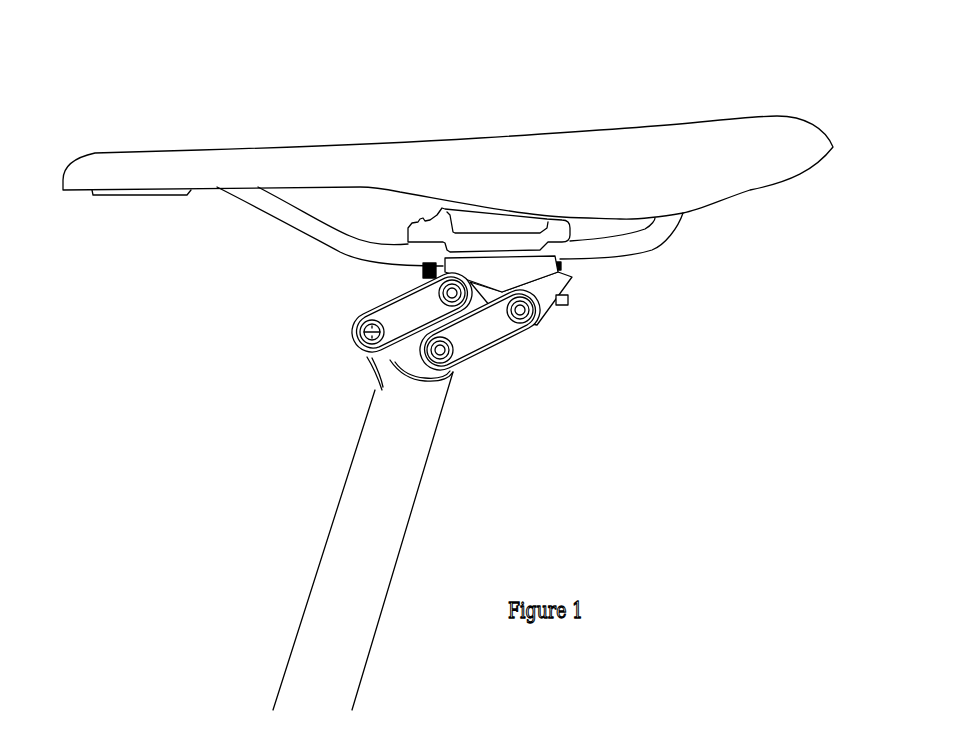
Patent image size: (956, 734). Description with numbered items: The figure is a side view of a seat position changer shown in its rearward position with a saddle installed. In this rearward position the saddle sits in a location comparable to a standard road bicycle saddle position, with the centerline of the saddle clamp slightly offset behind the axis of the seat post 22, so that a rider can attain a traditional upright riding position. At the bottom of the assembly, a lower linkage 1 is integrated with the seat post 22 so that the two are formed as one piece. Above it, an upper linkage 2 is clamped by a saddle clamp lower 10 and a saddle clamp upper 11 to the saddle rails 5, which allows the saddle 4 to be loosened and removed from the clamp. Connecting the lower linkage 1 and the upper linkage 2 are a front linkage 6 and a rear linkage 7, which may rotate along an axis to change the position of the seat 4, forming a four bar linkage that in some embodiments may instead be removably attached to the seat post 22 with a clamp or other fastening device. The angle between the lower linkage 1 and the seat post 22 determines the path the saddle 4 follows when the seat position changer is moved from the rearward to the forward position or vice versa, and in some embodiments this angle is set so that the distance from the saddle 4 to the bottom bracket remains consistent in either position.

The lower linkage 1 is at (397, 447).
The upper linkage 2 is at (547, 295).
The saddle 4 is at (302, 167).
The saddle rails 5 is at (643, 244).
The front linkage 6 is at (409, 312).
The rear linkage 7 is at (478, 333).
The saddle clamp lower 10 is at (502, 272).
The saddle clamp upper 11 is at (465, 225).
The seat post 22 is at (335, 560).